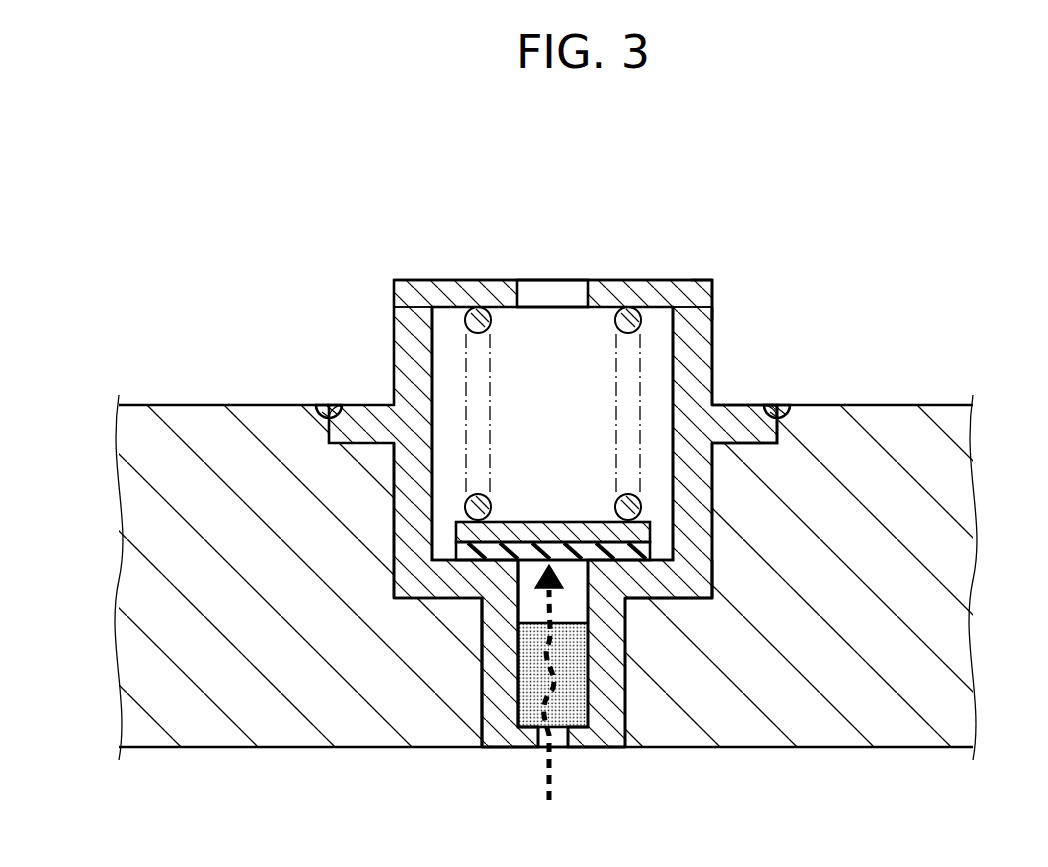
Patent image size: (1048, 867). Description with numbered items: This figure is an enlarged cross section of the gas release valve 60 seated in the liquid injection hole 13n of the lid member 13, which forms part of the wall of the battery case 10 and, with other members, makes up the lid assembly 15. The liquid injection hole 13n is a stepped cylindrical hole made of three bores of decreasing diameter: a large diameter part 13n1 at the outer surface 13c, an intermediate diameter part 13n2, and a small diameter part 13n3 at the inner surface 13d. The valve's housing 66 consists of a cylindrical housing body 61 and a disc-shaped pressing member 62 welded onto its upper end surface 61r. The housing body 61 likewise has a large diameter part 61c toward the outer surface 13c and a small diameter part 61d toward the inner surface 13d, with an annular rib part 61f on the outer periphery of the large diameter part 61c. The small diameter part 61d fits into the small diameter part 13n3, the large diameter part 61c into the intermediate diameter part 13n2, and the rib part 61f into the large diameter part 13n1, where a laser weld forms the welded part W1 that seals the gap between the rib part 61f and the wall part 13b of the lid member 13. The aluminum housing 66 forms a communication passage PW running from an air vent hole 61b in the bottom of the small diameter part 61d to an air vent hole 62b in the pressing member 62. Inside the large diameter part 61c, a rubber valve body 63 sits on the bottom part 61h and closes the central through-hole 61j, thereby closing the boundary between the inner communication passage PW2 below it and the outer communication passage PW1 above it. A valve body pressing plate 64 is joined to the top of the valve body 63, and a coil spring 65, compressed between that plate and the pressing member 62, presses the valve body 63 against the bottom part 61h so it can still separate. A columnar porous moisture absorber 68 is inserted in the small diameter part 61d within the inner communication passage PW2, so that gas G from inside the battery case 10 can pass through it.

The battery case 10 is at (206, 372).
The lid member 13 is at (140, 403).
The wall part 13b is at (345, 406).
The outer surface 13c is at (900, 405).
The inner surface 13d is at (785, 748).
The liquid injection hole 13n is at (398, 460).
The large diameter part 13n1 is at (340, 402).
The intermediate diameter part 13n2 is at (405, 600).
The small diameter part 13n3 is at (490, 730).
The lid assembly 15 is at (888, 300).
The gas release valve 60 is at (617, 292).
The housing body 61 is at (705, 352).
The air vent hole 61b is at (560, 742).
The large diameter part 61c is at (700, 330).
The small diameter part 61d is at (505, 662).
The rib part 61f is at (742, 418).
The bottom part 61h is at (672, 553).
The through-hole 61j is at (500, 615).
The upper end surface 61r is at (715, 283).
The pressing member 62 is at (473, 288).
The air vent hole 62b is at (531, 296).
The valve body 63 is at (465, 550).
The valve body pressing plate 64 is at (458, 520).
The coil spring 65 is at (477, 330).
The housing 66 is at (623, 270).
The porous moisture absorber 68 is at (515, 690).
The gas G is at (547, 772).
The communication passage PW is at (663, 463).
The outer communication passage PW1 is at (668, 348).
The inner communication passage PW2 is at (582, 615).
The welded part W1 is at (780, 410).